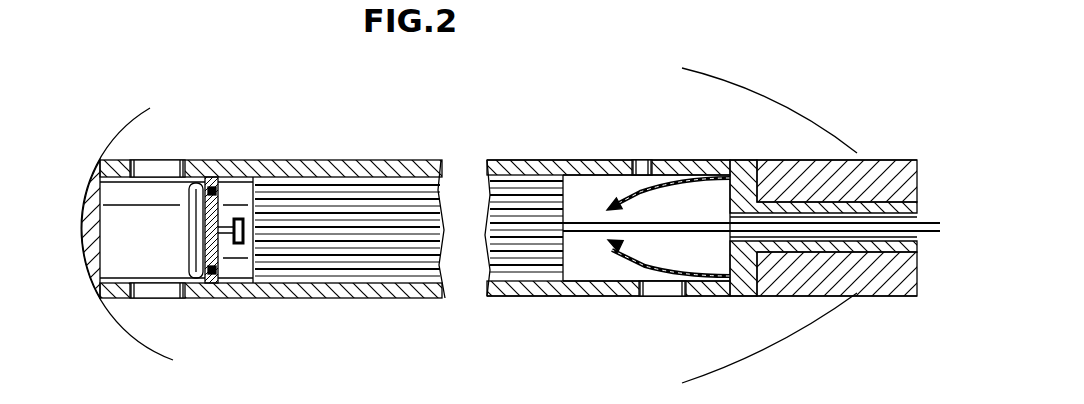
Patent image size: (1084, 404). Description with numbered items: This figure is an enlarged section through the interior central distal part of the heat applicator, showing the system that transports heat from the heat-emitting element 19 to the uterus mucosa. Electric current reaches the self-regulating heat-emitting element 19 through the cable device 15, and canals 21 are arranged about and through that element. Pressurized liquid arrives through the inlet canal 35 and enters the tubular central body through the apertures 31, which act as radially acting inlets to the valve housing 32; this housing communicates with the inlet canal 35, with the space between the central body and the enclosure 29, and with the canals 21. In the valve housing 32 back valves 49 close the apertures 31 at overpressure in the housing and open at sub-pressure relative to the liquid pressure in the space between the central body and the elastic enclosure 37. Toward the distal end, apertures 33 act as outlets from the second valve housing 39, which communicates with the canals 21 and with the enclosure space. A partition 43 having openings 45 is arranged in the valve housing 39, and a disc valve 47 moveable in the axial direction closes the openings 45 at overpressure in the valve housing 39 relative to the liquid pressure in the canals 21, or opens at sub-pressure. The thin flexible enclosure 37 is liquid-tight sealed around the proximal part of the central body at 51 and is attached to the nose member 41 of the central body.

The cable device 15 is at (865, 222).
The heat-emitting element 19 is at (365, 195).
The canals 21 is at (407, 200).
The enclosure 29 is at (328, 165).
The apertures 31 is at (668, 165).
The valve housing 32 is at (586, 253).
The apertures 33 is at (152, 168).
The inlet canal 35 is at (806, 213).
The enclosure or balloon 37 is at (151, 110).
The second valve housing 39 is at (165, 243).
The nose member 41 is at (84, 198).
The partition 43 is at (238, 246).
The openings 45 is at (213, 190).
The disc valve 47 is at (188, 246).
The back valves 49 is at (650, 192).
The seal location 51 is at (815, 265).